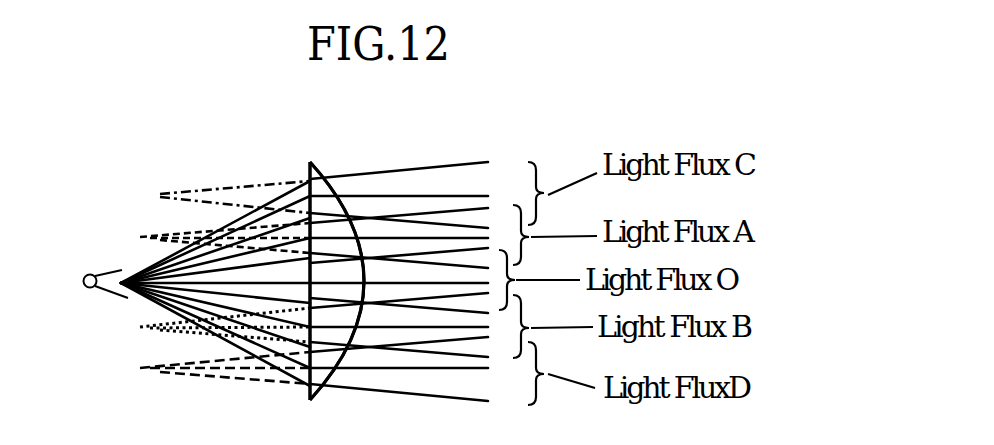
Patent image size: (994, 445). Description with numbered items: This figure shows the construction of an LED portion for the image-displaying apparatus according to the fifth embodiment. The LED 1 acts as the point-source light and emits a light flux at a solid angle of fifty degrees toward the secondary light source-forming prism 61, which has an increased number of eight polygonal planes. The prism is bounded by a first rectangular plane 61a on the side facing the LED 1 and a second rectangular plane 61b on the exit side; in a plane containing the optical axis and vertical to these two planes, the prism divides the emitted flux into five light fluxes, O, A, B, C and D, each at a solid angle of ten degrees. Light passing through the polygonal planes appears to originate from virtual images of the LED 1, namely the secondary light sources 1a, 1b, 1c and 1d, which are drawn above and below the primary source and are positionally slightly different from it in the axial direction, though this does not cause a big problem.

The LED 1 is at (85, 287).
The secondary light source 1a is at (160, 195).
The secondary light source 1b is at (140, 237).
The secondary light source 1c is at (140, 327).
The secondary light source 1d is at (140, 368).
The secondary light source-forming prism 61 is at (311, 163).
The first rectangular plane 61a is at (308, 176).
The second rectangular plane 61b is at (370, 276).